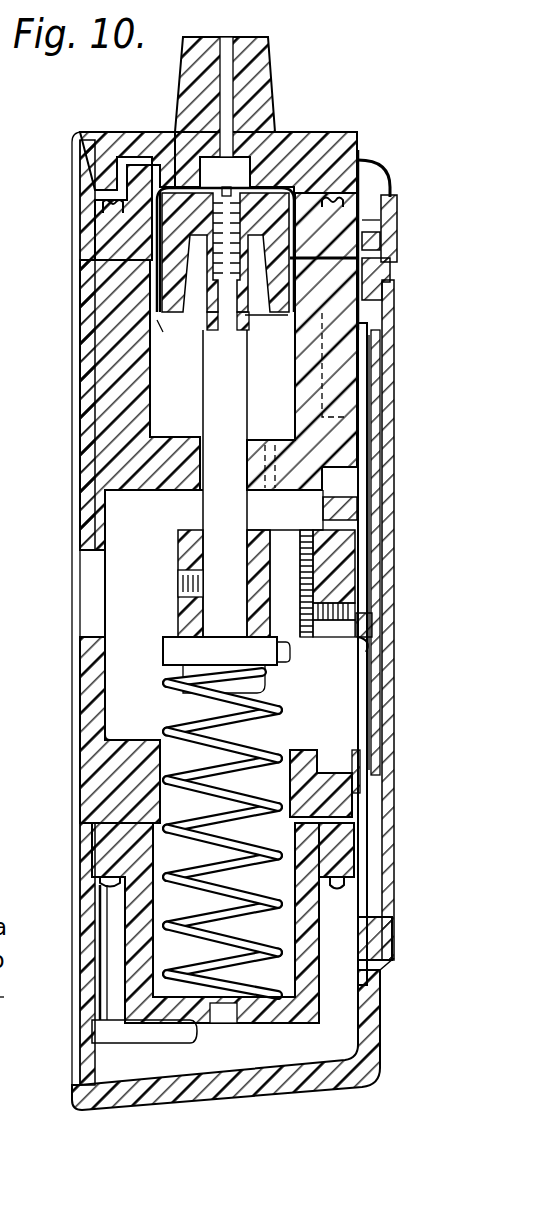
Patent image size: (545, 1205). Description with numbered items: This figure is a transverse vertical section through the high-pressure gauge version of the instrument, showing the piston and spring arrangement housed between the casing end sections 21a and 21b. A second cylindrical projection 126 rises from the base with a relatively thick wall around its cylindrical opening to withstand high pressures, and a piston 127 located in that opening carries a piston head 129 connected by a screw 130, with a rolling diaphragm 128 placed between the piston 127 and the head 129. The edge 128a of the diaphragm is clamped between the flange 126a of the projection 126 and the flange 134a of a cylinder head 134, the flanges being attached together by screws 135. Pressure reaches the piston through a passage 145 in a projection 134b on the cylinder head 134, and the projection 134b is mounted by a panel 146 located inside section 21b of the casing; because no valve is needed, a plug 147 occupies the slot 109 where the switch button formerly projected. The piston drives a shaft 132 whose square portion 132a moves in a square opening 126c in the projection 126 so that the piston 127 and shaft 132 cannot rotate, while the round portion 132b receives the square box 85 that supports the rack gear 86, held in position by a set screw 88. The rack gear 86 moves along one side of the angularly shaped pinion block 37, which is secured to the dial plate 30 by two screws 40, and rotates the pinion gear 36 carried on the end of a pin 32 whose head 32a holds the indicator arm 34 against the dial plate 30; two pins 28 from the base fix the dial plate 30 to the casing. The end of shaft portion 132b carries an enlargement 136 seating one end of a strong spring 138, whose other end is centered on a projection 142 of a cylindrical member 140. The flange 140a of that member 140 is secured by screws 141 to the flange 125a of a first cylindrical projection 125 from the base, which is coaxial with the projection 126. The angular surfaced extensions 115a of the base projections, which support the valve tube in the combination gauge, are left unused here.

The end section 21a is at (88, 132).
The end section 21b is at (299, 1097).
The cylinder head 134 is at (135, 183).
The flange 134a is at (118, 238).
The projection 134b is at (268, 78).
The screws 135 is at (113, 205).
The panel 146 is at (322, 137).
The passage 145 is at (230, 50).
The piston 127 is at (279, 188).
The slot 109 is at (384, 207).
The plug 147 is at (372, 247).
The edge of diaphragm 128a is at (300, 270).
The second cylindrical projection 126 is at (97, 292).
The flange 126a is at (153, 385).
The square opening 126c is at (200, 457).
The rolling diaphragm 128 is at (157, 306).
The piston head 129 is at (168, 190).
The screw 130 is at (250, 268).
The shaft 132 is at (222, 512).
The square shaft portion 132a is at (213, 415).
The round shaft portion 132b is at (225, 612).
The square box 85 is at (185, 548).
The set screw 88 is at (170, 577).
The rack gear 86 is at (317, 628).
The pinion block 37 is at (350, 558).
The screws 40 is at (365, 503).
The pin 32 is at (365, 597).
The head of pin 32a is at (360, 625).
The pinion gear 36 is at (367, 638).
The enlargement 136 is at (275, 677).
The spring 138 is at (180, 735).
The first cylindrical projection 125 is at (95, 788).
The flange 125a is at (344, 783).
The cylindrical member 140 is at (312, 1007).
The flange 140a is at (292, 857).
The screws 141 is at (339, 882).
The projection 142 is at (253, 975).
The angular surfaced extensions 115a is at (152, 1035).
The dial plate 30 is at (362, 358).
The pins 28 is at (365, 440).
The indicator arm 34 is at (375, 467).